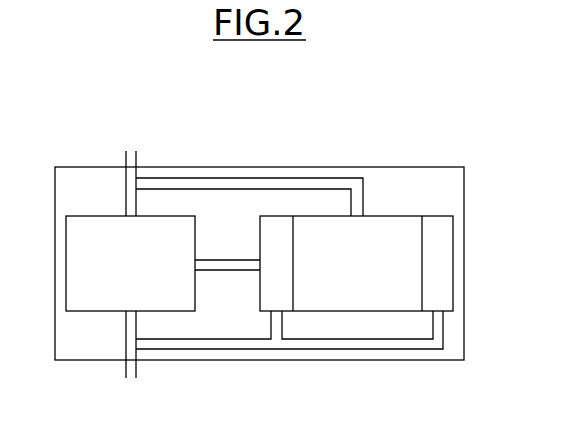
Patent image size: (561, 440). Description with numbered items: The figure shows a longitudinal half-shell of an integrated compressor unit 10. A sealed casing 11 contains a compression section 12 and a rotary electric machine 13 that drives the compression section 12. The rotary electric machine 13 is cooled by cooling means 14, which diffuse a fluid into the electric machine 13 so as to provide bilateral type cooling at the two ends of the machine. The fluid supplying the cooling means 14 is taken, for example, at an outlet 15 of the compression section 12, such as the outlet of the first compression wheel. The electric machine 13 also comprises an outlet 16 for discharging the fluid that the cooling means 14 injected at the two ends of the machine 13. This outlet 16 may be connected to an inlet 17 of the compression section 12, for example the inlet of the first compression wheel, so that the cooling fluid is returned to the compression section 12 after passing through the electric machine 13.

The integrated compressor unit 10 is at (345, 140).
The sealed casing 11 is at (468, 123).
The compression section 12 is at (130, 263).
The rotary electric machine 13 is at (356, 263).
The cooling means 14 is at (360, 352).
The outlet 15 is at (121, 349).
The outlet 16 is at (309, 167).
The inlet 17 is at (134, 177).